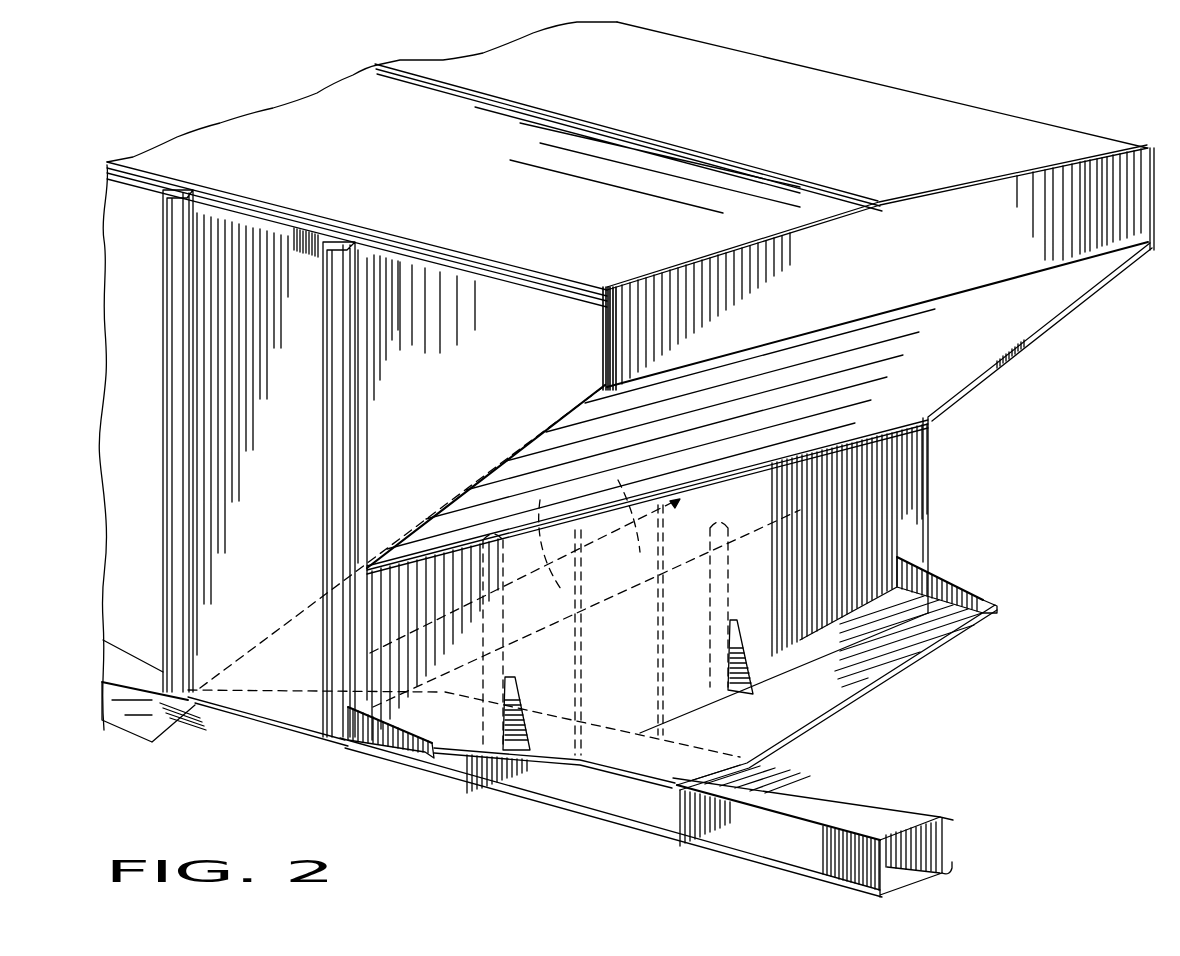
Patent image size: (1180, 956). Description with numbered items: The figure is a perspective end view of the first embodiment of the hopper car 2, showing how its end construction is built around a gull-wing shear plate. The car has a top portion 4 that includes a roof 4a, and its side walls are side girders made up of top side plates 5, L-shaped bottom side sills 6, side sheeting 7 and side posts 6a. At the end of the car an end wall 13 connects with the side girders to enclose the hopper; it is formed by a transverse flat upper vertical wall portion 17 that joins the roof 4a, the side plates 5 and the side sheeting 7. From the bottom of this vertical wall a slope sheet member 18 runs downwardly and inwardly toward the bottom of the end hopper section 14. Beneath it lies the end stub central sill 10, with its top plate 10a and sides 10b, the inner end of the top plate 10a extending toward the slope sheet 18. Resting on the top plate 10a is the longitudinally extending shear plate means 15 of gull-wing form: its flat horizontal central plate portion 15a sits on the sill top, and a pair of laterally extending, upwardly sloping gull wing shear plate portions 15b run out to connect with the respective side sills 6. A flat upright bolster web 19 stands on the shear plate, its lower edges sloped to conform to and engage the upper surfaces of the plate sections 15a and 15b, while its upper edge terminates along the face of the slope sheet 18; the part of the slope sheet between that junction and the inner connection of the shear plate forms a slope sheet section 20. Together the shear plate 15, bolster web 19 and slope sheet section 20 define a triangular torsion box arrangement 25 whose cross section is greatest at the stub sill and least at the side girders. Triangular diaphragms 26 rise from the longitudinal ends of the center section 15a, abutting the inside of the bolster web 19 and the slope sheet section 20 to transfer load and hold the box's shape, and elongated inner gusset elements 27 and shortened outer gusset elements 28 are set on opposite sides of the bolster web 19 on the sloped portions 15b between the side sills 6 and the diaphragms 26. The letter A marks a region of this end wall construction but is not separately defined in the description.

The hopper car 2 is at (150, 403).
The top portion 4 is at (787, 70).
The roof 4a is at (883, 100).
The top side plate 5 is at (1151, 147).
The bottom side sill 6 is at (282, 703).
The side post 6a is at (173, 198).
The side sheeting 7 is at (117, 287).
The end stub central sill 10 is at (943, 837).
The top plate of end stub center sill 10a is at (897, 815).
The sides of end stub center sill 10b is at (955, 870).
The end wall 13 is at (1127, 193).
The hopper section 14 is at (175, 703).
The shear plate means 15 is at (842, 708).
The central plate portion 15a is at (683, 786).
The gull wing shear plate portion 15b is at (580, 770).
The upper vertical wall portion 17 is at (815, 237).
The slope sheet member 18 is at (750, 460).
The bolster web 19 is at (873, 535).
The slope sheet section 20 is at (773, 513).
The torsion box arrangement 25 is at (405, 520).
The diaphragm 26 is at (584, 523).
The inner gusset element 27 is at (480, 612).
The outer gusset element 28 is at (520, 700).
The wall area A is at (882, 493).